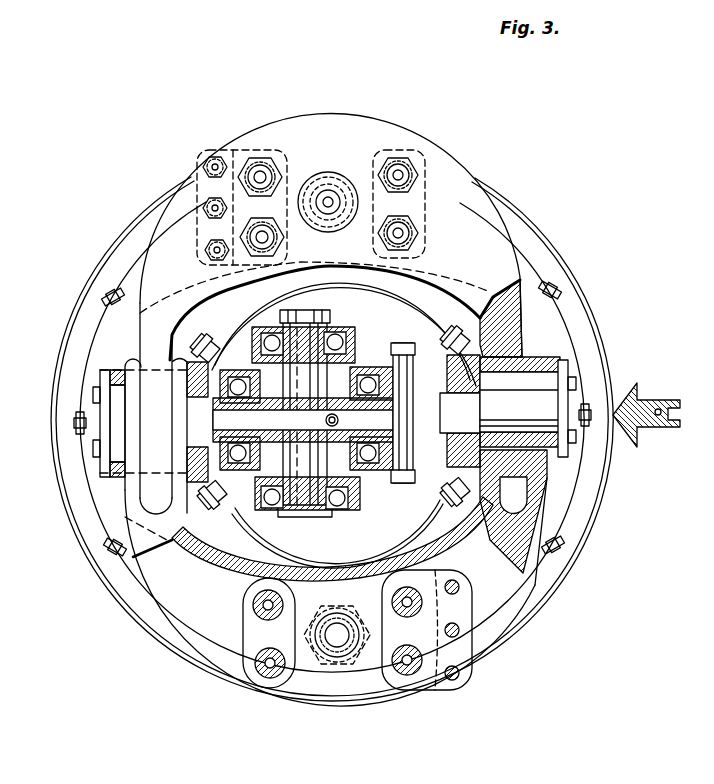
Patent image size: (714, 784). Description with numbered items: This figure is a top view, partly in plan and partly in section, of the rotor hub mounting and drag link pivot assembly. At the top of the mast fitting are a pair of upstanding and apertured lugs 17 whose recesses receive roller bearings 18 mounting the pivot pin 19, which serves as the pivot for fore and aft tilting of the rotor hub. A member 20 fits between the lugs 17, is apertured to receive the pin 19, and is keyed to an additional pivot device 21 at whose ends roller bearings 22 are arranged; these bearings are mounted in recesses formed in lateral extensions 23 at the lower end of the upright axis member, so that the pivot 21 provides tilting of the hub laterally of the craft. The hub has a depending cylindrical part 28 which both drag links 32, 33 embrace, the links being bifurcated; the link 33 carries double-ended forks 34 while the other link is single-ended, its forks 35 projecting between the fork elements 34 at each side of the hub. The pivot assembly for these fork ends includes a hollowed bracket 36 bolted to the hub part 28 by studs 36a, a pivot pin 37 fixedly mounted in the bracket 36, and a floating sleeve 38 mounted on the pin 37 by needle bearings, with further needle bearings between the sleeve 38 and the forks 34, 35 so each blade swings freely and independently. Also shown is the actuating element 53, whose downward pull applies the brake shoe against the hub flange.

The upstanding and apertured lugs 17 is at (352, 340).
The roller bearings 18 is at (337, 330).
The pivot pin 19 is at (270, 516).
The member 20 is at (358, 470).
The additional pivot device 21 is at (232, 470).
The roller bearings 22 is at (232, 362).
The lateral extensions 23 is at (240, 370).
The depending cylindrical part 28 is at (408, 330).
The drag link 32 is at (360, 132).
The drag link 33 is at (377, 693).
The double-ended forks 34 is at (133, 483).
The single-ended forks 35 is at (150, 403).
The hollowed bracket 36 is at (553, 460).
The studs 36a is at (468, 342).
The pivot pin 37 is at (535, 408).
The floating sleeve 38 is at (543, 383).
The actuating element 53 is at (655, 400).